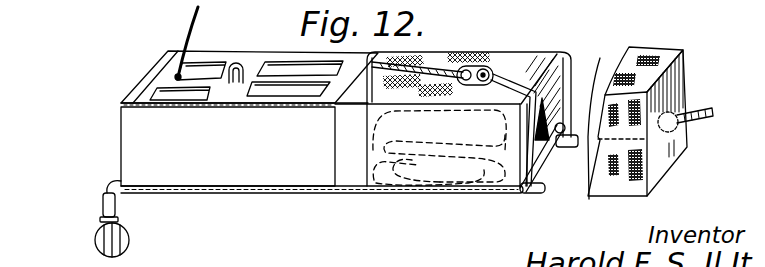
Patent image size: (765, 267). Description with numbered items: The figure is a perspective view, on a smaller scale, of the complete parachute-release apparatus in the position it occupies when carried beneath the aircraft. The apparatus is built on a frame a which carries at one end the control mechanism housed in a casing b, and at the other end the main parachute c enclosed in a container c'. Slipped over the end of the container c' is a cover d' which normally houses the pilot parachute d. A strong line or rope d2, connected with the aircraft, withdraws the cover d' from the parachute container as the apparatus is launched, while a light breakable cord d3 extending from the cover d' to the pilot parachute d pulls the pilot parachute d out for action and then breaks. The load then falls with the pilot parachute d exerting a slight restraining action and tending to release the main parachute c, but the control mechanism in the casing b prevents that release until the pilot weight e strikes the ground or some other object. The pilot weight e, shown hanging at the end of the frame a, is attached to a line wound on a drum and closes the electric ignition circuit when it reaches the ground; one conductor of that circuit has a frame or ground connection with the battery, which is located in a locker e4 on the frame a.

The frame a is at (198, 188).
The casing b is at (264, 48).
The main parachute c is at (431, 171).
The container c' is at (469, 101).
The pilot parachute d is at (549, 178).
The cover d' is at (563, 179).
The line or rope d2 is at (687, 50).
The breakable cord d3 is at (604, 110).
The pilot weight e is at (129, 238).
The locker e4 is at (348, 170).